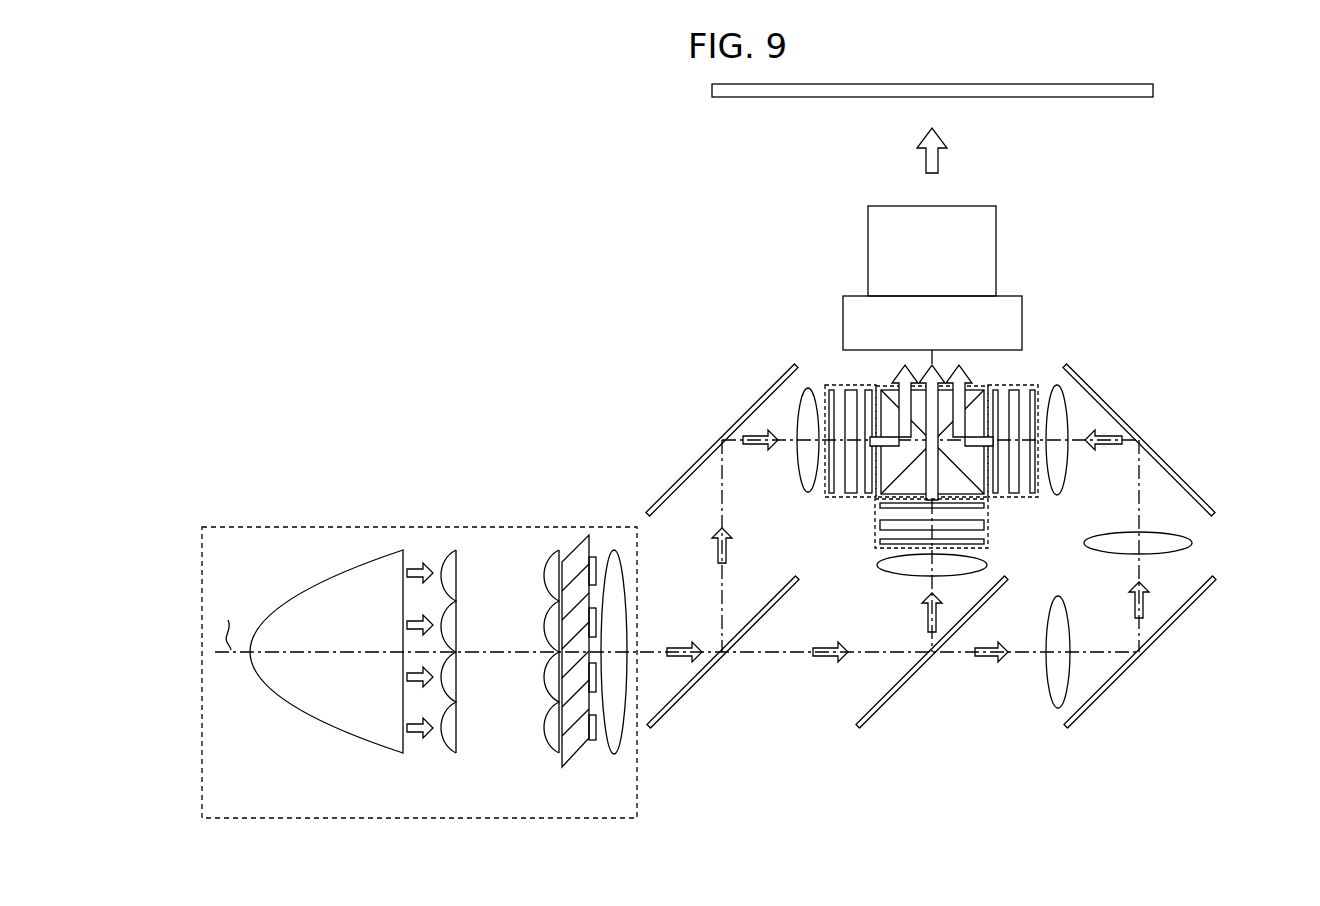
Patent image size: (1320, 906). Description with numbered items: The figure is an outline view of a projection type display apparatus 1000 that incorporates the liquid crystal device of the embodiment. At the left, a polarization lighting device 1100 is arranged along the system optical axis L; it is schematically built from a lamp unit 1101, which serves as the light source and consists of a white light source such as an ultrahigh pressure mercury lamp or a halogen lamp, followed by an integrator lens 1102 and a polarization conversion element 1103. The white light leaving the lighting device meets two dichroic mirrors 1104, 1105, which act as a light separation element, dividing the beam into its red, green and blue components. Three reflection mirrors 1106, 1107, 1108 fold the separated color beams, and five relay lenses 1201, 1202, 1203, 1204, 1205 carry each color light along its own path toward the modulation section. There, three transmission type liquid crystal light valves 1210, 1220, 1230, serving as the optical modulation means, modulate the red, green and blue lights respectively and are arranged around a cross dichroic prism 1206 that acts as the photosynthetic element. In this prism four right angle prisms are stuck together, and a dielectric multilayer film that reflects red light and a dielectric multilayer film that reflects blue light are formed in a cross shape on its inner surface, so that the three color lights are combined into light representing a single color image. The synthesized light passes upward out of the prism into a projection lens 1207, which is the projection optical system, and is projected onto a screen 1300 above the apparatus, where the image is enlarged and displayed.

The projection type display apparatus 1000 is at (1252, 175).
The polarization lighting device 1100 is at (436, 525).
The lamp unit 1101 is at (322, 733).
The integrator lens 1102 is at (457, 755).
The polarization conversion element 1103 is at (630, 762).
The dichroic mirror 1104 is at (690, 694).
The dichroic mirror 1105 is at (900, 694).
The reflection mirror 1106 is at (713, 432).
The reflection mirror 1107 is at (1105, 694).
The reflection mirror 1108 is at (1139, 432).
The relay lens 1201 is at (1058, 709).
The relay lens 1202 is at (1193, 545).
The relay lens 1203 is at (1057, 496).
The relay lens 1204 is at (878, 566).
The relay lens 1205 is at (808, 495).
The cross dichroic prism 1206 is at (975, 390).
The projection lens 1207 is at (996, 247).
The transmission type liquid crystal light valve 1210 is at (840, 385).
The transmission type liquid crystal light valve 1220 is at (990, 540).
The transmission type liquid crystal light valve 1230 is at (1030, 385).
The screen 1300 is at (1083, 97).